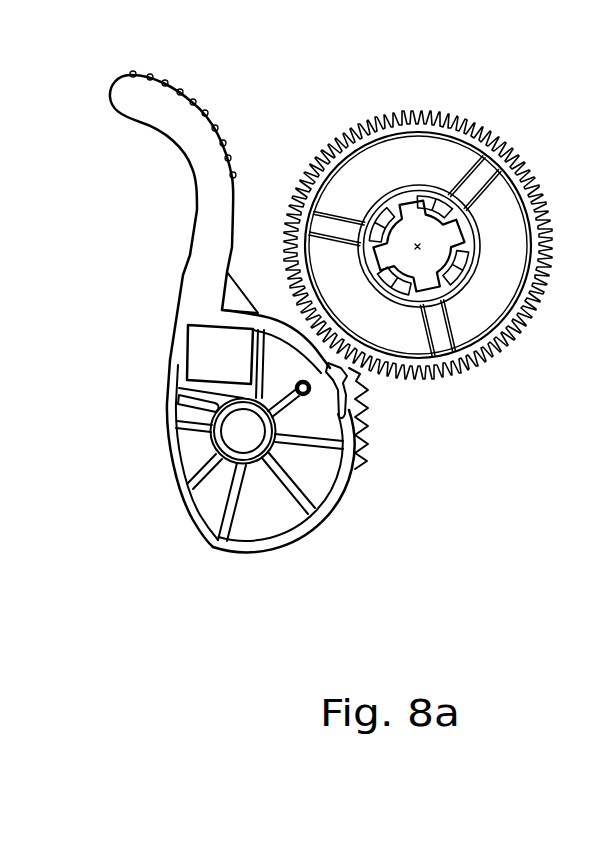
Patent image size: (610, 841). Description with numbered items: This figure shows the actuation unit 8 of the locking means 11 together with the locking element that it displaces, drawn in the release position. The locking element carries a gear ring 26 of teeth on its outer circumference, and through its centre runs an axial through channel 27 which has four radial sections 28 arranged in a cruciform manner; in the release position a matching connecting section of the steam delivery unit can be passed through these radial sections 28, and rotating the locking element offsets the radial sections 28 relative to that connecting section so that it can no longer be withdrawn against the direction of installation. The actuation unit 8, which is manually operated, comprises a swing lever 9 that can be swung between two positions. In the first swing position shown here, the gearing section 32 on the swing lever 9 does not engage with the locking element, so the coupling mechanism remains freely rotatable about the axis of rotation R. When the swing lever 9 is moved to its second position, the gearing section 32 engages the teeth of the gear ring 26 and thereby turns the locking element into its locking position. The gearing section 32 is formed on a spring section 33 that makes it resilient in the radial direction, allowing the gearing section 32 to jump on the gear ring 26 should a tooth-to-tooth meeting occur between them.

The actuation unit 8 is at (322, 545).
The swing lever 9 is at (220, 542).
The locking means 11 is at (538, 300).
The gear ring 26 is at (497, 142).
The axial through channel 27 is at (401, 221).
The radial sections 28 is at (375, 258).
The gearing section 32 is at (370, 427).
The spring section 33 is at (362, 388).
The axis of rotation R is at (415, 246).